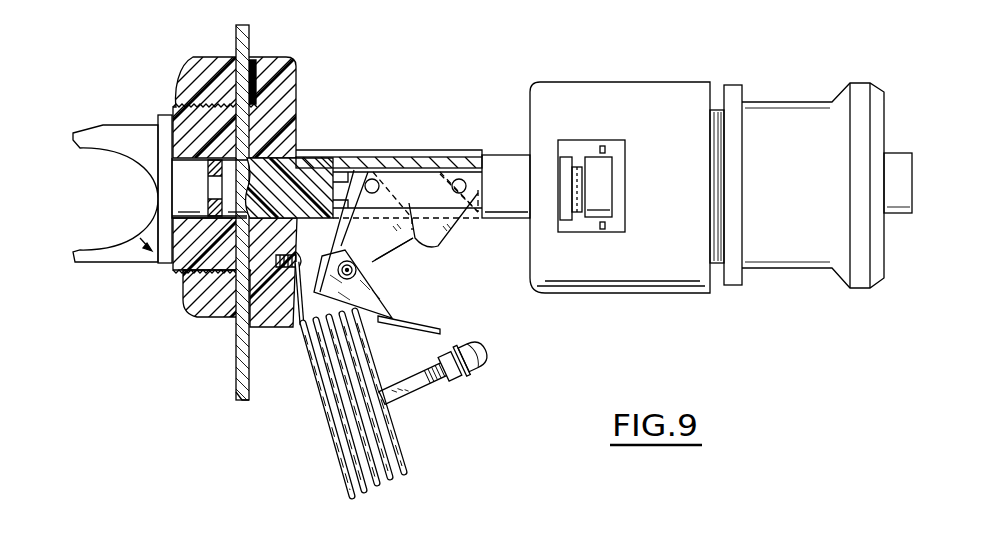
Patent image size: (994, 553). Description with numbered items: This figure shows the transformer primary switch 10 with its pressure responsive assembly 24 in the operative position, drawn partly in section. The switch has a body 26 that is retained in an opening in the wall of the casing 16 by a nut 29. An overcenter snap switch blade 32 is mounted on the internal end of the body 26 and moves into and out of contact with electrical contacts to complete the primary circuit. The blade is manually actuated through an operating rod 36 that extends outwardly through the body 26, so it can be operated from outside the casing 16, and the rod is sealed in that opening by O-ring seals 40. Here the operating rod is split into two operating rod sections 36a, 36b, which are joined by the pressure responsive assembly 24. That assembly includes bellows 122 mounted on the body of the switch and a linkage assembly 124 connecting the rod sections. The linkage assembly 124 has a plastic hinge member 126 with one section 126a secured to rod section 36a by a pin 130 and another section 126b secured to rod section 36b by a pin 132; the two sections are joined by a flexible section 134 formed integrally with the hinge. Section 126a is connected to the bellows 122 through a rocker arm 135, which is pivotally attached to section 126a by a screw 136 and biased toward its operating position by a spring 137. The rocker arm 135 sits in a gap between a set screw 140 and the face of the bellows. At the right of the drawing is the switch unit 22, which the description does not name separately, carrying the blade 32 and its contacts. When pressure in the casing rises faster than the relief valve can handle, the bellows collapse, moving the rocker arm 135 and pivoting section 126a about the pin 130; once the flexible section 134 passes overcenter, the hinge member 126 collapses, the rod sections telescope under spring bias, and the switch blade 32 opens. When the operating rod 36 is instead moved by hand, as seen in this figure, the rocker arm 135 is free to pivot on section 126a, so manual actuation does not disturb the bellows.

The primary switch 10 is at (227, 87).
The casing 16 is at (233, 36).
The electrical switch 22 is at (723, 168).
The pressure responsive assembly 24 is at (412, 420).
The body 26 is at (288, 88).
The nut 29 is at (192, 312).
The overcenter snap switch blade 32 is at (602, 226).
The operating rod 36 is at (112, 126).
The operating rod section 36a is at (308, 160).
The operating rod section 36b is at (514, 155).
The O-ring seals 40 is at (231, 287).
The bellows 122 is at (395, 478).
The linkage assembly 124 is at (391, 252).
The plastic hinge member 126 is at (340, 241).
The hinge member section 126a is at (392, 253).
The hinge member section 126b is at (462, 236).
The pin 130 is at (372, 179).
The pin 132 is at (457, 179).
The flexible section 134 is at (420, 242).
The rocker arm 135 is at (380, 289).
The screw 136 is at (351, 262).
The spring 137 is at (378, 307).
The set screw 140 is at (480, 370).